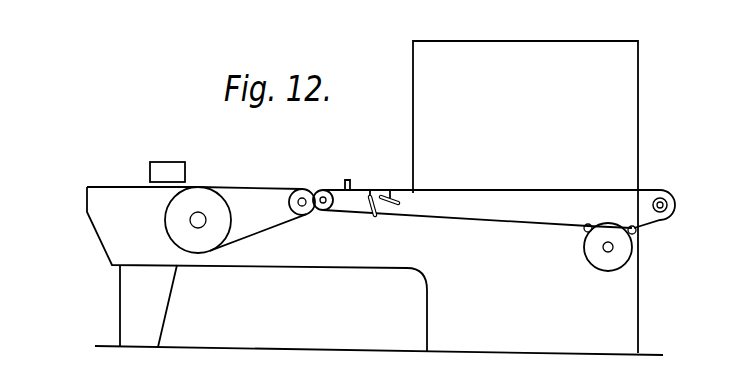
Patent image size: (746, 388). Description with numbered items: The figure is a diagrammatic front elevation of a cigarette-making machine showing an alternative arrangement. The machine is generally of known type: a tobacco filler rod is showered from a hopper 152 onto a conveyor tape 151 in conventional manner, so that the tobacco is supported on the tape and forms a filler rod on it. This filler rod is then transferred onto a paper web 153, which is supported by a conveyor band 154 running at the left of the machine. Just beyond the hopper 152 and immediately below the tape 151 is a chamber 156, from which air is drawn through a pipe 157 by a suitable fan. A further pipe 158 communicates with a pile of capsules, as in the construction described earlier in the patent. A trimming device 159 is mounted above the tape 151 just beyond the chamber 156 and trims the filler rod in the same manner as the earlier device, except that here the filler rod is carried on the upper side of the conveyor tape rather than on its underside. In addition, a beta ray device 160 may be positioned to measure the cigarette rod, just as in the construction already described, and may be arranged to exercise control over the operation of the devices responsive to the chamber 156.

The conveyor tape 151 is at (532, 191).
The hopper 152 is at (620, 113).
The paper web 153 is at (313, 213).
The conveyor band 154 is at (270, 228).
The chamber 156 is at (372, 191).
The pipe 157 is at (376, 215).
The further pipe 158 is at (413, 192).
The trimming device 159 is at (345, 180).
The beta ray device 160 is at (164, 162).